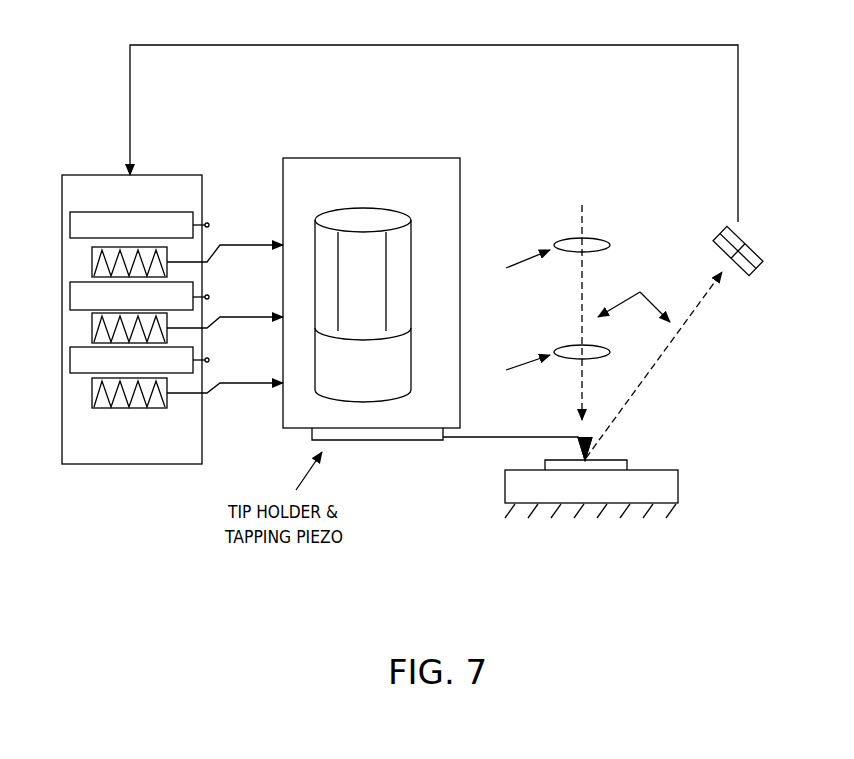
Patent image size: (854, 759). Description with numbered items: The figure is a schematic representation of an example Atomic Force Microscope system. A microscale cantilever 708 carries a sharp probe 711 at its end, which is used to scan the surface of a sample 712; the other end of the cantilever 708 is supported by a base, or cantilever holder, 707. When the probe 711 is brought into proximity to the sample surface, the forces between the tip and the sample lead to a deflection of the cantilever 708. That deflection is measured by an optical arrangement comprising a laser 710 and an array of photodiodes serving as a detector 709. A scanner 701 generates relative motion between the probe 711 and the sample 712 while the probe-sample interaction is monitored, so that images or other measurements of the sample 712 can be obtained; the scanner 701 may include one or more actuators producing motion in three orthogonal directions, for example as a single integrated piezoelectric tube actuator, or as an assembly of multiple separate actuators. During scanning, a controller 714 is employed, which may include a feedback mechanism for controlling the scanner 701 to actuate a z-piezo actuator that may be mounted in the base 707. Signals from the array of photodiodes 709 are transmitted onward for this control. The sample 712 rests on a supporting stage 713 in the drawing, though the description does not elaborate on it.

The scanner 701 is at (460, 165).
The base (cantilever holder) 707 is at (383, 442).
The cantilever 708 is at (480, 443).
The array of photodiodes (detector) 709 is at (755, 245).
The laser 710 is at (584, 205).
The probe 711 is at (589, 440).
The sample 712 is at (624, 459).
The sample stage 713 is at (675, 503).
The controller 714 is at (153, 175).